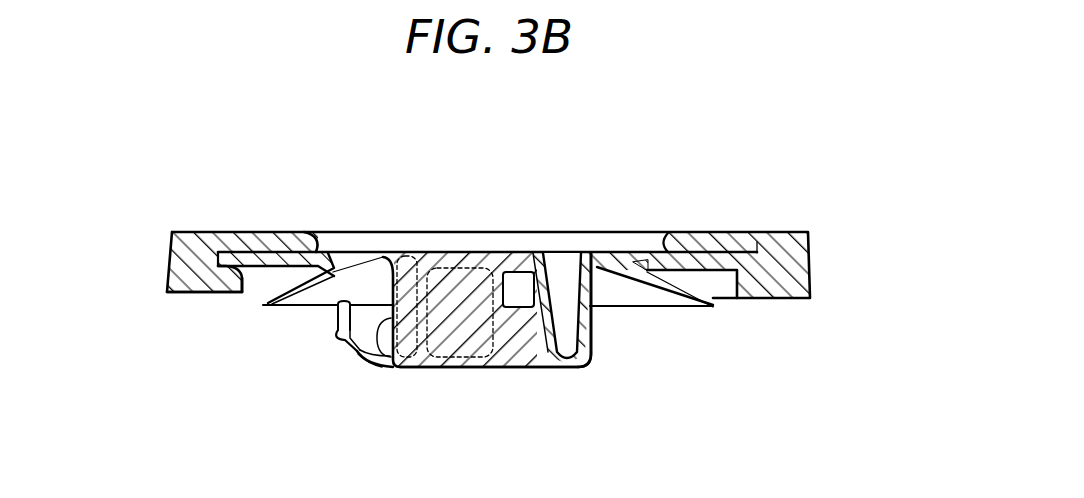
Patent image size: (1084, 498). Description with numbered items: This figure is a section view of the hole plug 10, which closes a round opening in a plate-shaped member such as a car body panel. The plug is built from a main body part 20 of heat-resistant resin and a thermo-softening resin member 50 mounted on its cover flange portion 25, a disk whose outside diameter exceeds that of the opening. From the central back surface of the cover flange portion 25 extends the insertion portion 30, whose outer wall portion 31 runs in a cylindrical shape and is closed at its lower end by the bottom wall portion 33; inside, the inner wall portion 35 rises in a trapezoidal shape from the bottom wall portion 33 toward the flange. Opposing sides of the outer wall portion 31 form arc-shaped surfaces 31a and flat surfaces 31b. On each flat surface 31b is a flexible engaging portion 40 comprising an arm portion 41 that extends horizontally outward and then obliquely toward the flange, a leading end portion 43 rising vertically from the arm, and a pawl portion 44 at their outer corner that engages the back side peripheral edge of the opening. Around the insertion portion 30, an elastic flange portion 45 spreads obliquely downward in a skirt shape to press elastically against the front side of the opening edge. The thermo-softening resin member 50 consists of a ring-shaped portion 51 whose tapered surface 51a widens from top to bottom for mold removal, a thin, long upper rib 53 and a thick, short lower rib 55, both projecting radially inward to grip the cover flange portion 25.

The hole plug 10 is at (757, 212).
The main body part 20 is at (635, 246).
The cover flange portion 25 is at (300, 233).
The insertion portion 30 is at (537, 401).
The outer wall portion 31 is at (593, 337).
The arc-shaped surface 31a is at (594, 354).
The flat surface 31b is at (382, 366).
The bottom wall portion 33 is at (418, 354).
The inner wall portion 35 is at (527, 252).
The engaging portion 40 is at (362, 378).
The arm portion 41 is at (362, 357).
The leading end portion 43 is at (337, 315).
The pawl portion 44 is at (332, 340).
The elastic flange portion 45 is at (684, 307).
The thermo-softening resin member 50 is at (820, 242).
The ring-shaped portion 51 is at (190, 268).
The tapered surface 51a is at (166, 290).
The upper rib 53 is at (268, 233).
The lower rib 55 is at (224, 288).